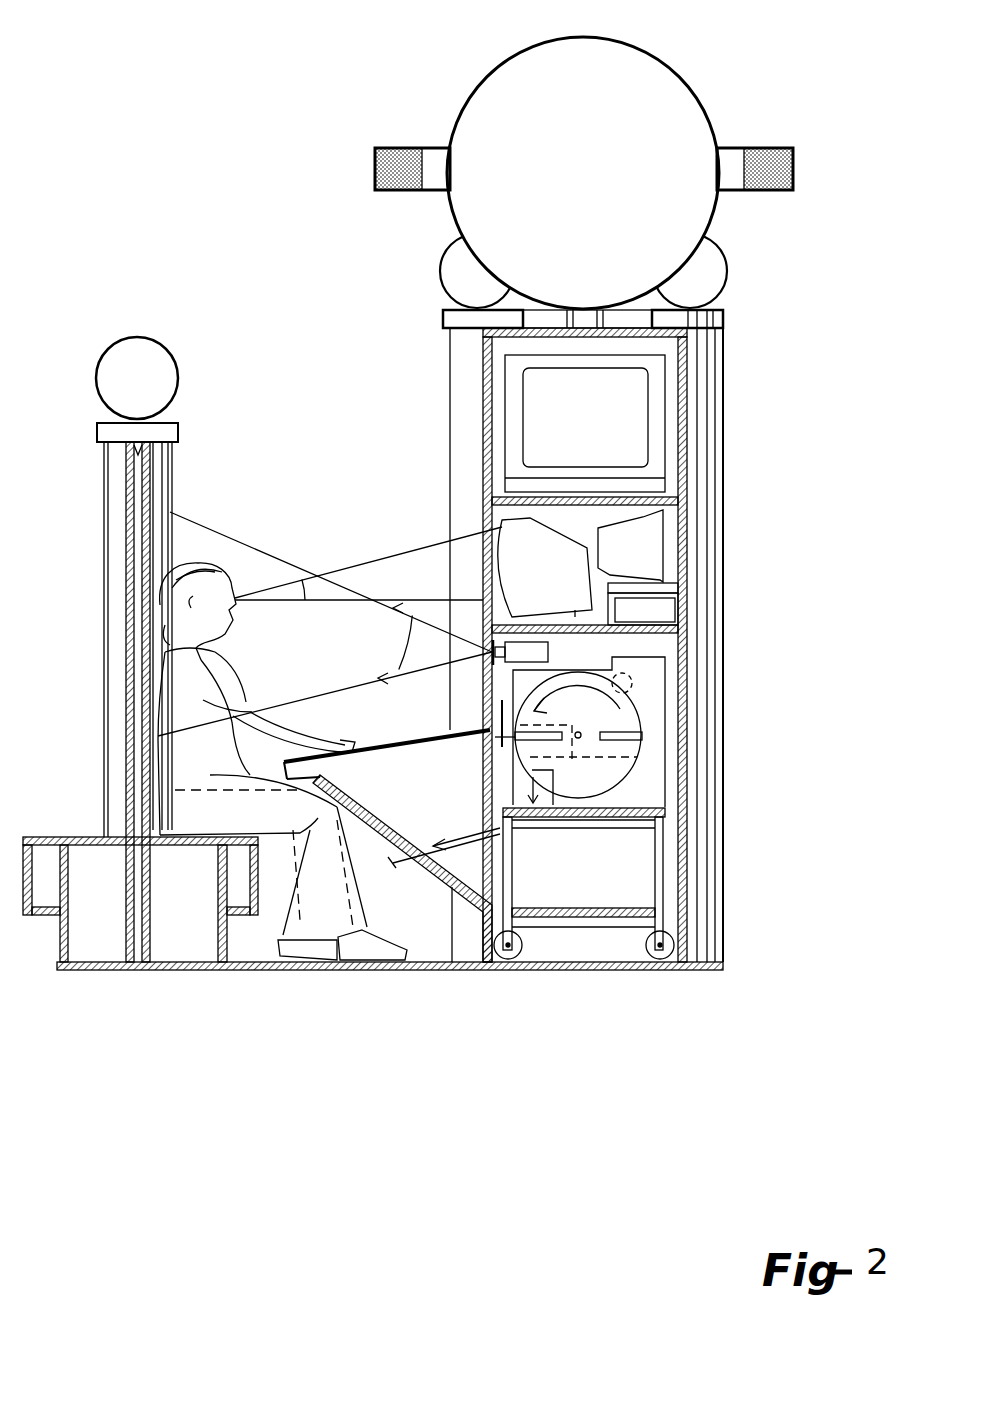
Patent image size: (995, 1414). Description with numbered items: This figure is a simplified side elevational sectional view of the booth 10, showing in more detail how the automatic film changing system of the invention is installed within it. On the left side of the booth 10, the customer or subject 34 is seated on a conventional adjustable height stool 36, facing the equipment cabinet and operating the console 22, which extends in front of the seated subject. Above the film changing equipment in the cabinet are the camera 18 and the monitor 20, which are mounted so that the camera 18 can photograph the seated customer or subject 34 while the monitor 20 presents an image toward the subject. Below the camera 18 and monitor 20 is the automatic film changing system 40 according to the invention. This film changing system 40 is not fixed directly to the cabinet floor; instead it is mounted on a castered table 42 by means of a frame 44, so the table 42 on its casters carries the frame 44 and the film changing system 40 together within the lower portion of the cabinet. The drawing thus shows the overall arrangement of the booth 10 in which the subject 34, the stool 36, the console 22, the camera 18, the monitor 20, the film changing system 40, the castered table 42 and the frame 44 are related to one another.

The booth 10 is at (212, 29).
The camera 18 is at (535, 657).
The monitor 20 is at (537, 551).
The console 22 is at (373, 745).
The customer or subject 34 is at (228, 698).
The adjustable height stool 36 is at (188, 845).
The automatic film changing system 40 is at (672, 687).
The castered table 42 is at (663, 838).
The frame 44 is at (655, 742).